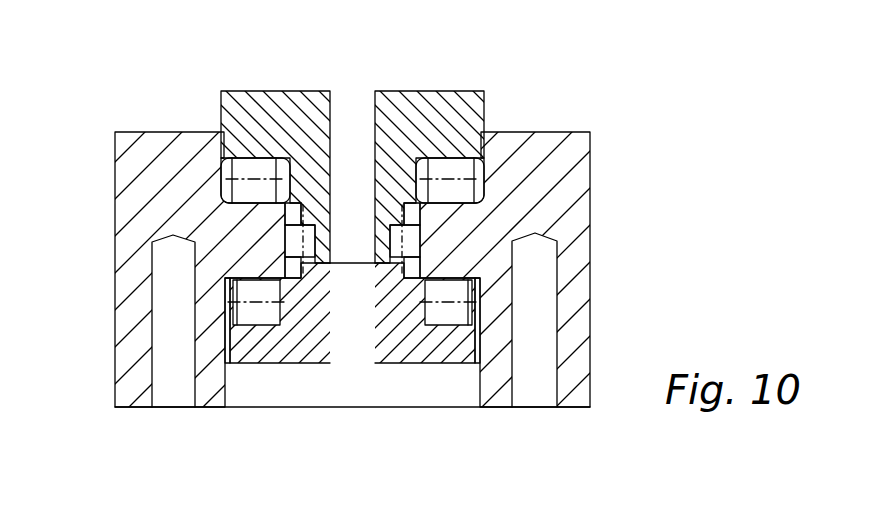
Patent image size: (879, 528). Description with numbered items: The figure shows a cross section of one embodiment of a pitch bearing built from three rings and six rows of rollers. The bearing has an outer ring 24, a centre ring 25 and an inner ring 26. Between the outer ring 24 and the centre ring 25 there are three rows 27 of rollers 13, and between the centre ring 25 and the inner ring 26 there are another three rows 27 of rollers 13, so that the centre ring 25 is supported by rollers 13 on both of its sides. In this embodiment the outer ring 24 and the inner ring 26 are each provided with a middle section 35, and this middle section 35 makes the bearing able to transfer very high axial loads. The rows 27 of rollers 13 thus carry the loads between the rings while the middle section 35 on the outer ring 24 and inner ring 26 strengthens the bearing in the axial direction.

The roller 13 is at (240, 190).
The outer ring 24 is at (558, 197).
The centre ring 25 is at (412, 118).
The inner ring 26 is at (146, 205).
The row 27 is at (285, 244).
The middle section 35 is at (267, 260).